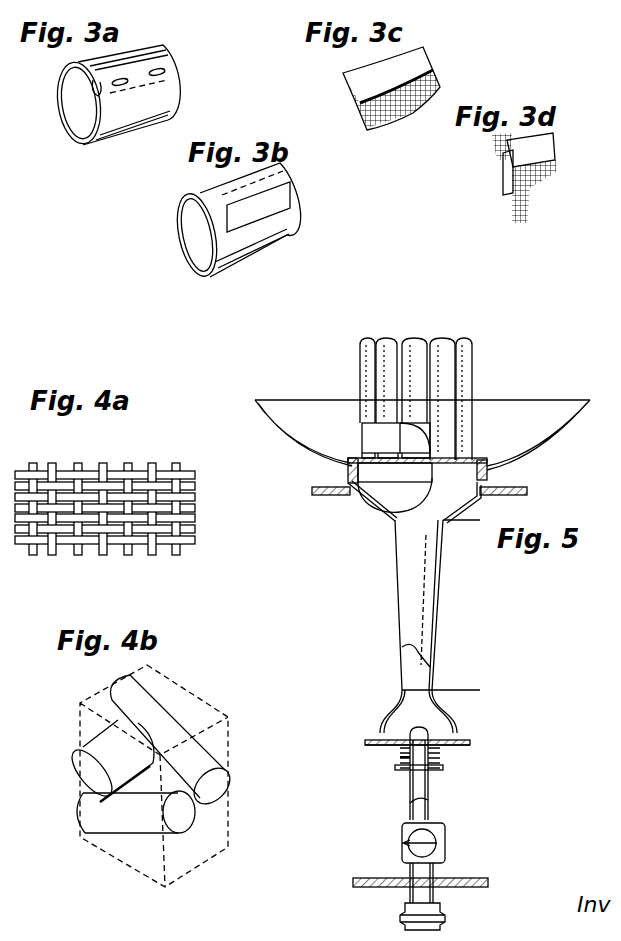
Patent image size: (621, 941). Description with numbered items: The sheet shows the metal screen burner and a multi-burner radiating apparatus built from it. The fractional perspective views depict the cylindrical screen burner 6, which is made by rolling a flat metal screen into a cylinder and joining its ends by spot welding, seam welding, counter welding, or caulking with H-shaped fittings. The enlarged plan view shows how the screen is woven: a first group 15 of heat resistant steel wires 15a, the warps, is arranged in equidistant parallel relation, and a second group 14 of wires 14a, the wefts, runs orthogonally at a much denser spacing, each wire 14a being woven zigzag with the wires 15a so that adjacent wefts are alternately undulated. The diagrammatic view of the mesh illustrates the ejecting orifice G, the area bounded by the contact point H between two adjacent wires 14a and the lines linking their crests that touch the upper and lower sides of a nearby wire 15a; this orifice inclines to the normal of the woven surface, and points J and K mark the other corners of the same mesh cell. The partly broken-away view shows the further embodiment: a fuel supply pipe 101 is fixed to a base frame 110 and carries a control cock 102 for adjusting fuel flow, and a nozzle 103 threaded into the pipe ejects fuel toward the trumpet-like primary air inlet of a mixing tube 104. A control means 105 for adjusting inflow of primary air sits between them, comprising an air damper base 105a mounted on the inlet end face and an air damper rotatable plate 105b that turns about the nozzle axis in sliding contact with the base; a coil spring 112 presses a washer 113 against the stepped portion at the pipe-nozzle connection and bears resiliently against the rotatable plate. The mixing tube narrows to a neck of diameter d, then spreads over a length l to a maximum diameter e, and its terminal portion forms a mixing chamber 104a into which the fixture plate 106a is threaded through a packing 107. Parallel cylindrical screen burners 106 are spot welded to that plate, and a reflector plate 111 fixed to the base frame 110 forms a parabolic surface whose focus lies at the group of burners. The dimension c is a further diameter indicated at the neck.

In FIG. 3A, the screen burner 6 is at (125, 123).
In FIG. 3B, the screen burner 6 is at (228, 258).
In FIG. 3C, the screen burner 6 is at (388, 122).
In FIG. 3D, the screen burner 6 is at (510, 210).
In FIG. 4A, the second group of wire elements 14 is at (129, 486).
In FIG. 4A, the wire element of the second group 14a is at (188, 473).
In FIG. 4B, the wire element of the second group 14a is at (177, 785).
In FIG. 4A, the first group of wire elements 15 is at (129, 486).
In FIG. 4A, the wire element of the first group 15a is at (32, 458).
In FIG. 4B, the wire element of the first group 15a is at (92, 771).
In FIG. 4B, the ejecting orifice G is at (147, 783).
In FIG. 4B, the contact point H is at (195, 810).
In FIG. 4B, the wire contact point J is at (170, 705).
In FIG. 4B, the wire contact point K is at (95, 790).
In FIG. 5, the fuel supply pipe 101 is at (430, 893).
In FIG. 5, the control cock 102 is at (447, 843).
In FIG. 5, the nozzle 103 is at (425, 768).
In FIG. 5, the mixing tube 104 is at (407, 602).
In FIG. 5, the mixing chamber 104a is at (373, 497).
In FIG. 5, the control means for adjusting inflow of primary air 105 is at (440, 750).
In FIG. 5, the air damper base 105a is at (463, 733).
In FIG. 5, the air damper rotatable plate 105b is at (373, 747).
In FIG. 5, the cylindrical metal screen burners 106 is at (382, 376).
In FIG. 5, the fixture plate 106a is at (357, 457).
In FIG. 5, the packing 107 is at (350, 468).
In FIG. 5, the base frame 110 is at (322, 495).
In FIG. 5, the reflector plate 111 is at (535, 408).
In FIG. 5, the coil spring 112 is at (403, 757).
In FIG. 5, the washer 113 is at (400, 770).
In FIG. 5, the maximum diameter of the spread portion e is at (437, 523).
In FIG. 5, the length of the spread portion l is at (475, 522).
In FIG. 5, the diameter of the narrowest neck portion d is at (418, 688).
In FIG. 5, the neck diameter dimension c is at (372, 713).